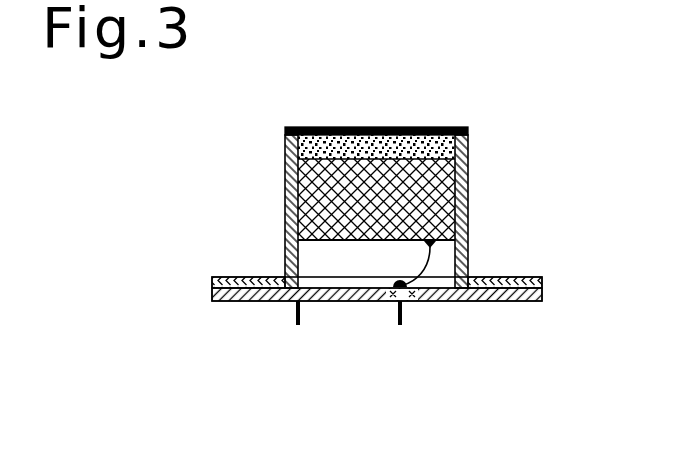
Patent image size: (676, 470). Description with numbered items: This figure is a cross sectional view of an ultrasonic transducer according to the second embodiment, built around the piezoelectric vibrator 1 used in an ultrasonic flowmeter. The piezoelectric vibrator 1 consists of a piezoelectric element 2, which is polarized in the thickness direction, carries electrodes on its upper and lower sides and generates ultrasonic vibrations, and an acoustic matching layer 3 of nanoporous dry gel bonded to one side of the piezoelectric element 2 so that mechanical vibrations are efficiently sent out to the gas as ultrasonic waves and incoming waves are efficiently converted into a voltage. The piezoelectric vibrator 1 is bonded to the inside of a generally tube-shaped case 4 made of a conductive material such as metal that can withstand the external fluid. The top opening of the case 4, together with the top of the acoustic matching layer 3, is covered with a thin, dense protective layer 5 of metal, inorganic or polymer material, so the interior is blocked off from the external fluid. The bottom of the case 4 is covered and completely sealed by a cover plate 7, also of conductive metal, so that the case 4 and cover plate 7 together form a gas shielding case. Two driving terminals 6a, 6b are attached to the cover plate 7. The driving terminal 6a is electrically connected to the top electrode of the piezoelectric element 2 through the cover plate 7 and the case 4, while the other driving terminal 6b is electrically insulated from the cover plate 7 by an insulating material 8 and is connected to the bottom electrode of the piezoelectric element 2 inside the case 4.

The piezoelectric vibrator 1 is at (453, 72).
The piezoelectric element 2 is at (468, 182).
The acoustic matching layer 3 is at (468, 143).
The case 4 is at (468, 228).
The protective layer 5 is at (447, 128).
The driving terminal 6a is at (299, 313).
The driving terminal 6b is at (403, 313).
The cover plate 7 is at (497, 302).
The insulating material 8 is at (406, 305).